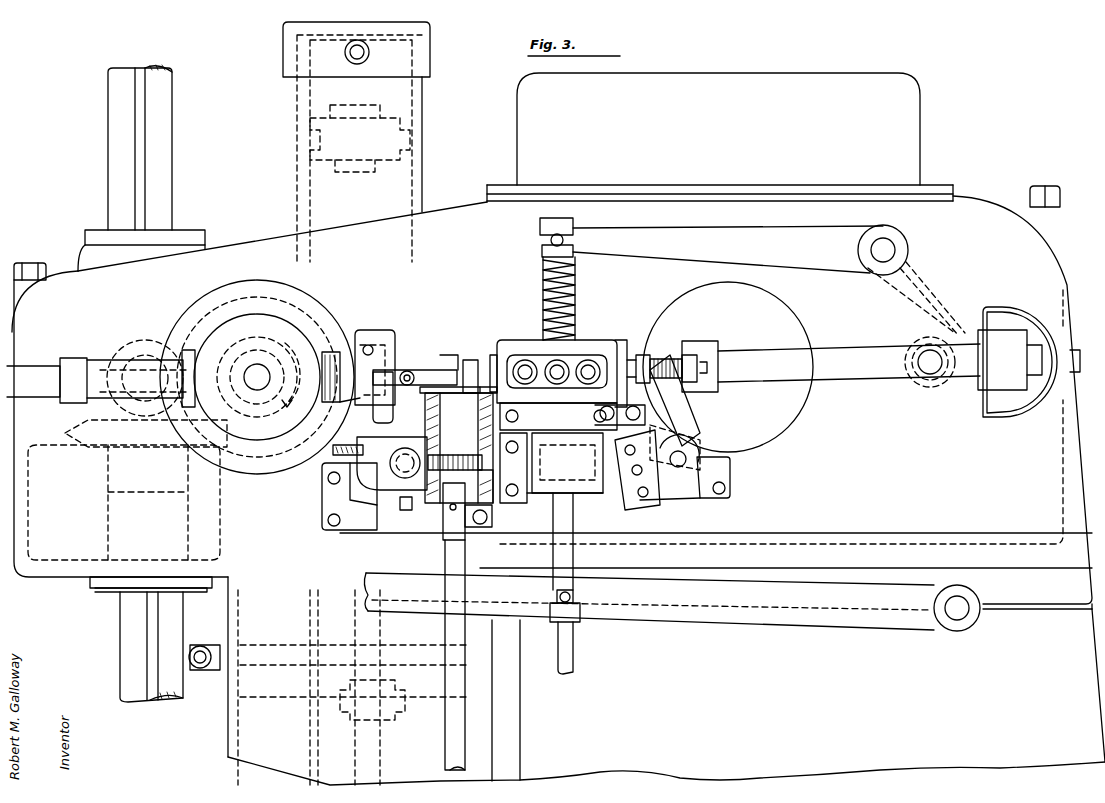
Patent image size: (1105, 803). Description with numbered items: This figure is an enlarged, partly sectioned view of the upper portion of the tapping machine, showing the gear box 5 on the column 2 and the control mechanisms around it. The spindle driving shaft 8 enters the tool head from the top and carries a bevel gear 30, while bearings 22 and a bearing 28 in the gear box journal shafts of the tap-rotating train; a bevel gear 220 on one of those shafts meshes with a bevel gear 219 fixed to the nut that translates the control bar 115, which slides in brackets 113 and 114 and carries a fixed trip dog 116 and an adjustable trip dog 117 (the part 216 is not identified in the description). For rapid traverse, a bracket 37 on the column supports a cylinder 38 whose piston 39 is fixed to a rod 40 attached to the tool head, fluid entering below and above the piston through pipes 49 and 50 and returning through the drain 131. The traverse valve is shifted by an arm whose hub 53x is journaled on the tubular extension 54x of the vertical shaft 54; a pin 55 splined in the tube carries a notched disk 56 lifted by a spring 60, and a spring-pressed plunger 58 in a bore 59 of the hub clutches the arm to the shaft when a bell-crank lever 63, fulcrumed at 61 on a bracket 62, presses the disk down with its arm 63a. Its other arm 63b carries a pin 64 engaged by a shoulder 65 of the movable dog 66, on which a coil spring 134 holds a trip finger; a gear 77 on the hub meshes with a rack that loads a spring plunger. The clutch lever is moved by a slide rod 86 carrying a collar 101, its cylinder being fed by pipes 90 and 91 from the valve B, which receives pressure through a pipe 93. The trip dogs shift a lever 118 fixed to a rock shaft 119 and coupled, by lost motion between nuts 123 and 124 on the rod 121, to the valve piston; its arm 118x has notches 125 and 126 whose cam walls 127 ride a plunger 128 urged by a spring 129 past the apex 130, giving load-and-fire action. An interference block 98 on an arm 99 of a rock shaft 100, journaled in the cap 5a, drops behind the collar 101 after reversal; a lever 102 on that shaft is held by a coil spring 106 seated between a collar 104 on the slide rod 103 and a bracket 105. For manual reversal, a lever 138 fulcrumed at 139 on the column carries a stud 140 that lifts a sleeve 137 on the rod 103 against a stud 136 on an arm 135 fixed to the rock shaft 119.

The column 2 is at (1066, 673).
The gear box 5 is at (558, 485).
The cap of the gear-box 5a is at (953, 241).
The power driven shaft 8 is at (125, 650).
The bearings 22 is at (105, 355).
The bearing 28 is at (153, 340).
The bevel gear 30 is at (90, 448).
The bracket 37 is at (374, 681).
The cylinder 38 is at (421, 186).
The piston 39 is at (405, 137).
The rod 40 is at (345, 760).
The pipe 49 is at (200, 670).
The pipe 50 is at (362, 64).
The hub 53x is at (425, 395).
The shaft 54 is at (445, 742).
The tubular extension 54x is at (440, 527).
The pin 55 is at (428, 426).
The disk-like head 56 is at (453, 372).
The spring pressed plunger 58 is at (487, 466).
The bore 59 is at (487, 397).
The spring 60 is at (380, 462).
The fulcrum 61 is at (409, 370).
The bracket 62 is at (328, 510).
The bell-crank lever 63 is at (400, 345).
The arm 63a is at (438, 358).
The arm 63b is at (338, 412).
The pin 64 is at (436, 511).
The shoulder 65 is at (425, 412).
The movable dog 66 is at (381, 333).
The gear 77 is at (482, 462).
The slide rod 86 is at (925, 372).
The fluid pressure pipe 90 is at (524, 363).
The fluid pressure pipe 91 is at (592, 366).
The pipe 93 is at (553, 363).
The interference block 98 is at (947, 333).
The arm 99 is at (945, 312).
The rock-shaft 100 is at (890, 248).
The collar 101 is at (932, 385).
The lever 102 is at (728, 249).
The slide-rod 103 is at (575, 650).
The collar 104 is at (543, 255).
The bracket 105 is at (708, 499).
The coil spring 106 is at (578, 281).
The bracket 113 is at (273, 460).
The bracket 114 is at (1002, 392).
The control-bar 115 is at (811, 367).
The trip-dog 116 is at (705, 344).
The second trip-dog 117 is at (505, 358).
The lever 118 is at (690, 410).
The arm 118x is at (688, 500).
The rock-shaft 119 is at (687, 462).
The rod 121 is at (668, 360).
The nut 123 is at (645, 357).
The nut 124 is at (700, 395).
The notch 125 is at (567, 462).
The notch 126 is at (660, 500).
The cam wall 127 is at (637, 500).
The spring-pressed plunger 128 is at (595, 493).
The spring 129 is at (535, 472).
The apex 130 is at (605, 505).
The drain 131 is at (470, 360).
The coil spring 134 is at (358, 357).
The arm 135 is at (705, 440).
The stud 136 is at (545, 500).
The sleeve 137 is at (582, 592).
The manually actuable lever 138 is at (736, 618).
The fulcrum 139 is at (956, 622).
The stud 140 is at (552, 603).
The gear rim 216 is at (257, 377).
The bevel gear 219 is at (282, 350).
The bevel gear 220 is at (271, 389).
The valve B is at (585, 340).